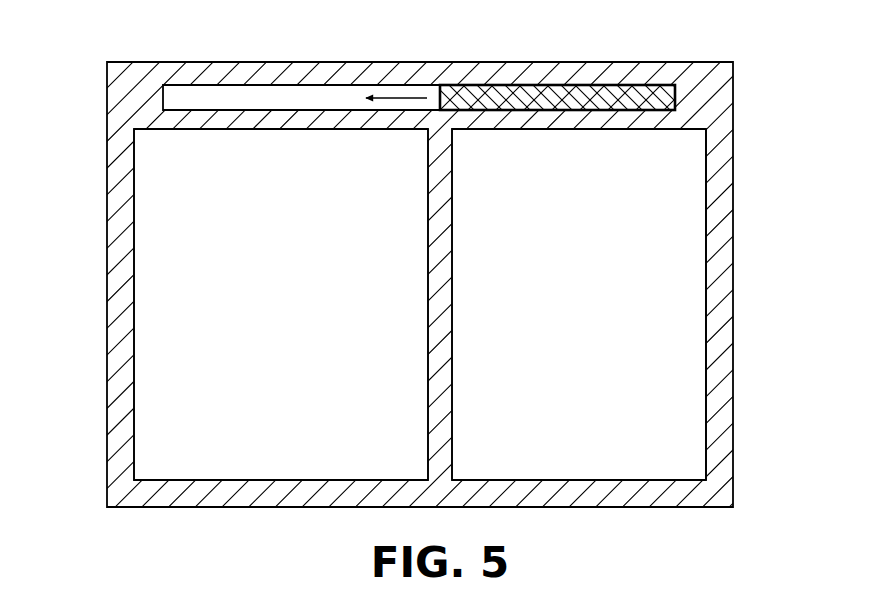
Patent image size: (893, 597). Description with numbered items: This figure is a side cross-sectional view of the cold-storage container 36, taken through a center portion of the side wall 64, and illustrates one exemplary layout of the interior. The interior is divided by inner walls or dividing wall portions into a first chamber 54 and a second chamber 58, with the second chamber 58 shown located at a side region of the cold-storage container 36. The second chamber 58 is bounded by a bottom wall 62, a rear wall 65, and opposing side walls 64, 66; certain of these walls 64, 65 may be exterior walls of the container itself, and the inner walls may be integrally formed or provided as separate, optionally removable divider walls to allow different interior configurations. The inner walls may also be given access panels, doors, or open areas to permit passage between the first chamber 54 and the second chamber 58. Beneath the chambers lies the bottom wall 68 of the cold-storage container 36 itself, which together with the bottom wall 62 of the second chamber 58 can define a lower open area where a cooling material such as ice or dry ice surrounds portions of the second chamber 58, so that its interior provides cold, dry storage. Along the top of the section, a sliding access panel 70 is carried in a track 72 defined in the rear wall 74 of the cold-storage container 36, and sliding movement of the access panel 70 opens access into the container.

The cold-storage container 36 is at (761, 47).
The first chamber 54 is at (189, 232).
The second chamber 58 is at (661, 206).
The bottom wall 62 is at (582, 299).
The side wall 64 is at (734, 300).
The rear wall 65 is at (603, 508).
The side wall 66 is at (428, 305).
The bottom wall 68 is at (277, 299).
The sliding access panel 70 is at (562, 85).
The track 72 is at (298, 84).
The rear wall 74 is at (441, 62).